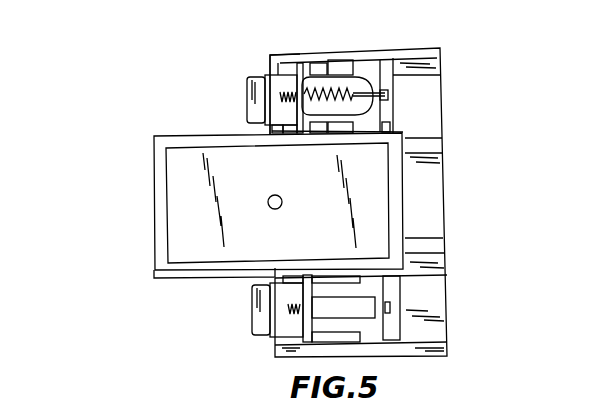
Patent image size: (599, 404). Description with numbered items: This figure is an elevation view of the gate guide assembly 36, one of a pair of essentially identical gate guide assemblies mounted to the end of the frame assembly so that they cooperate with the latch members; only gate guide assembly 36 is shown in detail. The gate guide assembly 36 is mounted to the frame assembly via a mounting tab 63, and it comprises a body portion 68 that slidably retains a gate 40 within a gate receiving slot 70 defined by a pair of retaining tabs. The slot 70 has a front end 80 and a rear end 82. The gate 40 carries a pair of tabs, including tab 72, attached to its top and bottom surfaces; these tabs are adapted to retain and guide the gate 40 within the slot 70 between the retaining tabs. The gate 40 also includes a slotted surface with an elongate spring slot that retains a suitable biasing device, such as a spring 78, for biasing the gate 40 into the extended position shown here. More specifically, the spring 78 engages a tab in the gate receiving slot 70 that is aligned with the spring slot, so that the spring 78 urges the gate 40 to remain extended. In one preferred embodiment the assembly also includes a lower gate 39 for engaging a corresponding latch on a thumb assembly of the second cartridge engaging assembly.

The gate guide assembly 36 is at (452, 53).
The lower gate 39 is at (252, 318).
The gate 40 is at (247, 92).
The mounting tab 63 is at (155, 200).
The body portion 68 is at (444, 268).
The gate receiving slot 70 is at (395, 75).
The tab 72 is at (338, 62).
The spring 78 is at (388, 96).
The front end 80 is at (270, 62).
The rear end 82 is at (390, 127).